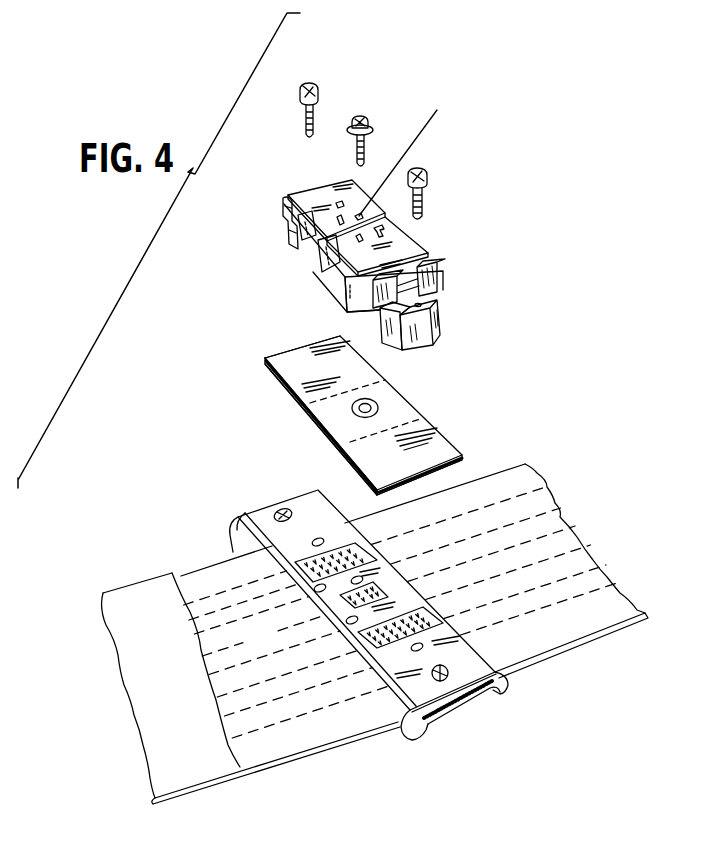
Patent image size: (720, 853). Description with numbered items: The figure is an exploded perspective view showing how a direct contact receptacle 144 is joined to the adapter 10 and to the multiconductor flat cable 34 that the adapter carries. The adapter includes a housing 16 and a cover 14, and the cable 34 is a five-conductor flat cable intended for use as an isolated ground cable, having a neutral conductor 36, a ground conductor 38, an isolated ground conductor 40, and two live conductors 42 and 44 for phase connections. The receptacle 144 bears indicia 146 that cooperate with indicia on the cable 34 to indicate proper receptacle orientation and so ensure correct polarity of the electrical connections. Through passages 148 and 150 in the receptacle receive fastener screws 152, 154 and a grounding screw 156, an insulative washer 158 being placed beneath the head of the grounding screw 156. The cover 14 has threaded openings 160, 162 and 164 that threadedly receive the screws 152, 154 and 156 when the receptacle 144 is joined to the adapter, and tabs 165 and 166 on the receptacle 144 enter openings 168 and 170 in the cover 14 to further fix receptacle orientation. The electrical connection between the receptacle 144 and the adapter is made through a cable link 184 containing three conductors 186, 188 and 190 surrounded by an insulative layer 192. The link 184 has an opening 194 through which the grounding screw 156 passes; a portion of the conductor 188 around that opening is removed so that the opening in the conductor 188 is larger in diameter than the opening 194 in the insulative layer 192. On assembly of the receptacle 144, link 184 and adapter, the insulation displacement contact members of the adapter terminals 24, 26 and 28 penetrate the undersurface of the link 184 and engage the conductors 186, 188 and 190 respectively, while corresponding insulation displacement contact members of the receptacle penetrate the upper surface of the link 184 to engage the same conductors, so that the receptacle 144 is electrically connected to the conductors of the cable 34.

The connector base plate 10 is at (421, 726).
The cover 14 is at (473, 686).
The housing 16 is at (462, 698).
The adapter terminal 24 is at (335, 553).
The adapter terminal 26 is at (362, 580).
The adapter terminal 28 is at (380, 628).
The cable 34 is at (321, 746).
The neutral conductor 36 is at (212, 583).
The ground conductor 38 is at (190, 618).
The isolated ground conductor 40 is at (210, 657).
The live conductor 42 is at (220, 697).
The live conductor 44 is at (233, 745).
The direct contact receptacle 144 is at (443, 256).
The indicia 146 is at (285, 223).
The through passage 148 is at (438, 302).
The through passage 150 is at (377, 152).
The fastener screw 152 is at (310, 84).
The fastener screw 154 is at (427, 172).
The grounding screw 156 is at (357, 117).
The insulative washer 158 is at (372, 128).
The threaded opening 160 is at (313, 542).
The threaded opening 162 is at (423, 645).
The threaded opening 164 is at (375, 587).
The tab 165 is at (312, 273).
The tab 166 is at (348, 307).
The opening 168 is at (319, 592).
The opening 170 is at (347, 625).
The cable link 184 is at (417, 407).
The conductor 186 is at (277, 385).
The conductor 188 is at (310, 422).
The conductor 190 is at (347, 462).
The insulative layer 192 is at (373, 484).
The opening 194 is at (374, 402).